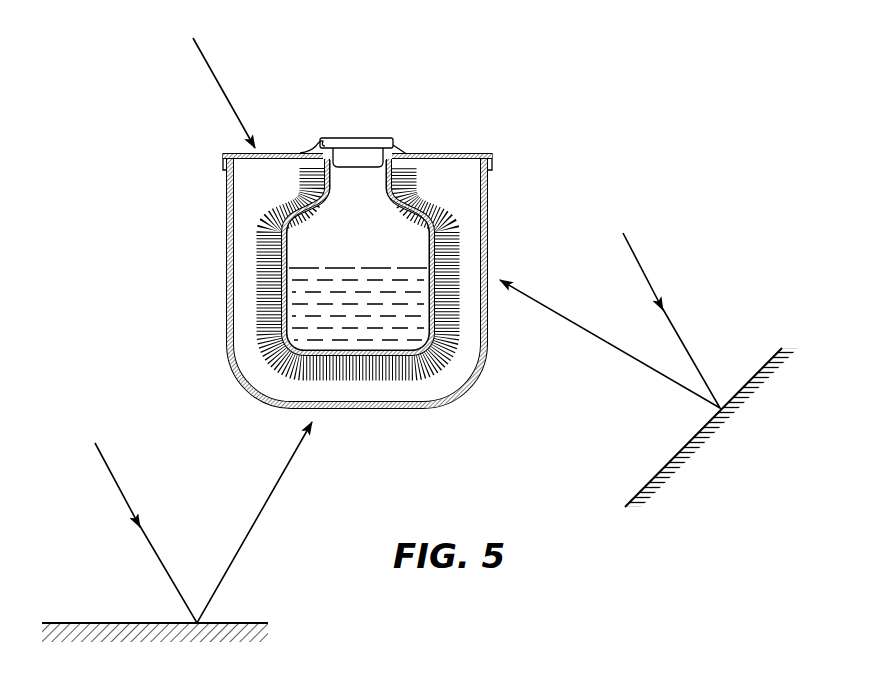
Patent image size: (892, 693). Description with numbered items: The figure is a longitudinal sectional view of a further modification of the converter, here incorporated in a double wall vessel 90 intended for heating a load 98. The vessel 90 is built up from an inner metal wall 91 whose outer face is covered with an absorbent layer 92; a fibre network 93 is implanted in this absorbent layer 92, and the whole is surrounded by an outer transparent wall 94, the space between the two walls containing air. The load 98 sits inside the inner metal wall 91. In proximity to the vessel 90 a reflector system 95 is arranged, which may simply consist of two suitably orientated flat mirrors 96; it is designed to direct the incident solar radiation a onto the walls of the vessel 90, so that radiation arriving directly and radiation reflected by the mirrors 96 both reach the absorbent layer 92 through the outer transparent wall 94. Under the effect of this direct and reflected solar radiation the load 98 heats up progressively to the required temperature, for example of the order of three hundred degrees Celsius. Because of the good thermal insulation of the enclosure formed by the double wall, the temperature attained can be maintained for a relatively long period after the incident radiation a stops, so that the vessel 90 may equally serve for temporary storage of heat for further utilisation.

The double wall vessel 90 is at (382, 310).
The inner metal wall 91 is at (437, 357).
The absorbent layer 92 is at (453, 330).
The fibre network 93 is at (454, 247).
The outer transparent wall 94 is at (488, 200).
The reflector system 95 is at (420, 495).
The flat mirrors 96 is at (97, 622).
The load 98 is at (348, 280).
The incident solar radiation a is at (215, 78).